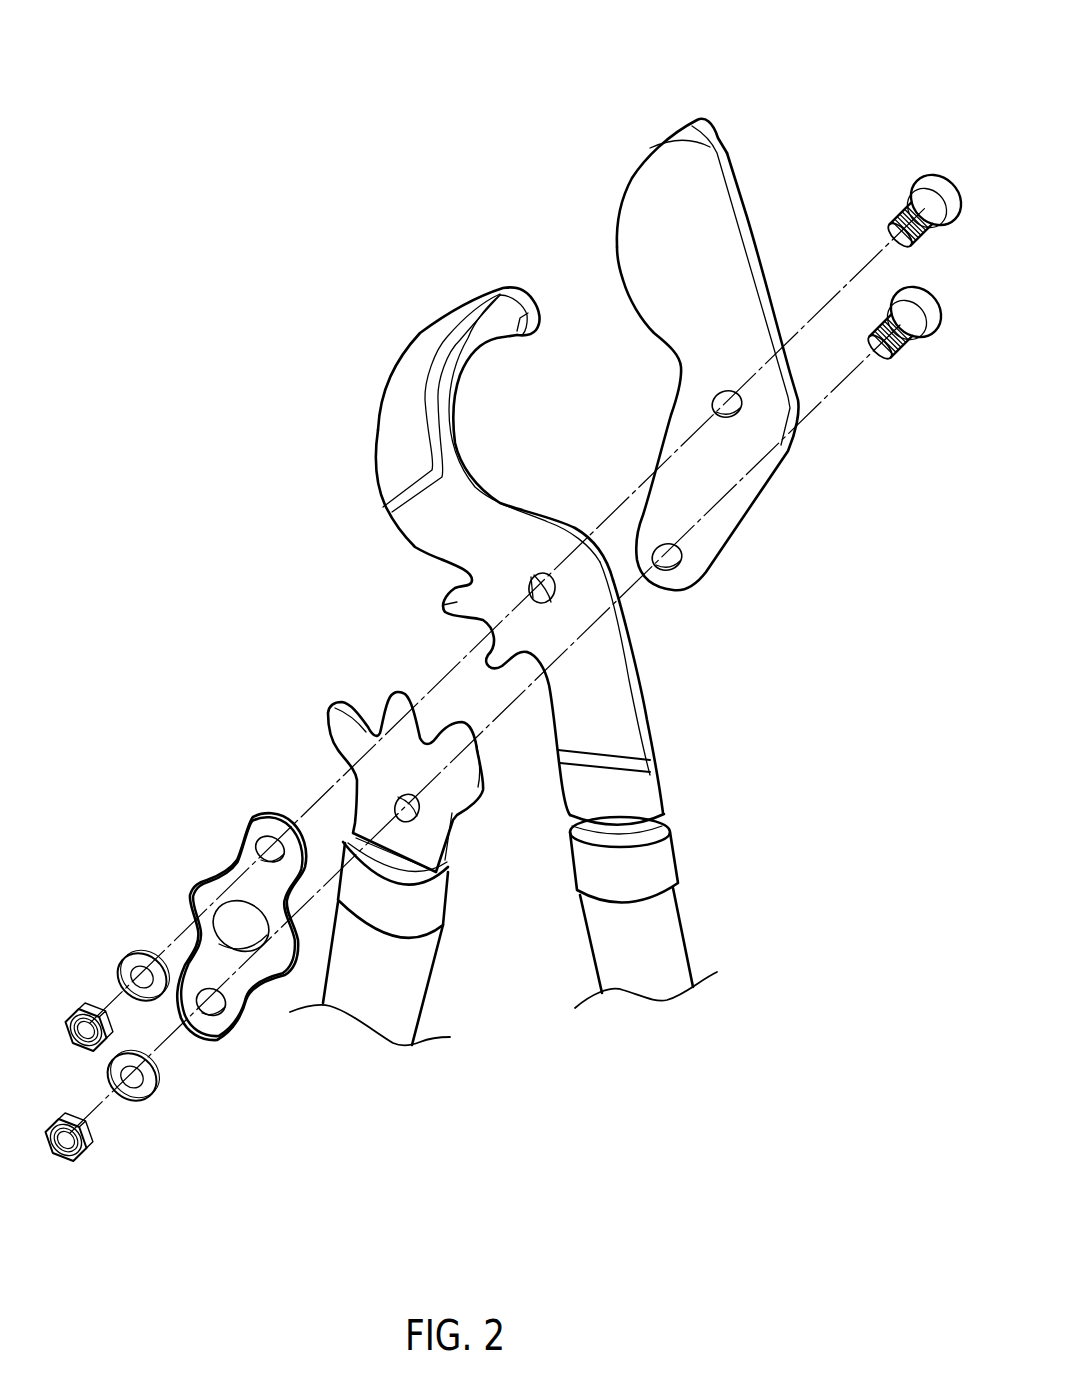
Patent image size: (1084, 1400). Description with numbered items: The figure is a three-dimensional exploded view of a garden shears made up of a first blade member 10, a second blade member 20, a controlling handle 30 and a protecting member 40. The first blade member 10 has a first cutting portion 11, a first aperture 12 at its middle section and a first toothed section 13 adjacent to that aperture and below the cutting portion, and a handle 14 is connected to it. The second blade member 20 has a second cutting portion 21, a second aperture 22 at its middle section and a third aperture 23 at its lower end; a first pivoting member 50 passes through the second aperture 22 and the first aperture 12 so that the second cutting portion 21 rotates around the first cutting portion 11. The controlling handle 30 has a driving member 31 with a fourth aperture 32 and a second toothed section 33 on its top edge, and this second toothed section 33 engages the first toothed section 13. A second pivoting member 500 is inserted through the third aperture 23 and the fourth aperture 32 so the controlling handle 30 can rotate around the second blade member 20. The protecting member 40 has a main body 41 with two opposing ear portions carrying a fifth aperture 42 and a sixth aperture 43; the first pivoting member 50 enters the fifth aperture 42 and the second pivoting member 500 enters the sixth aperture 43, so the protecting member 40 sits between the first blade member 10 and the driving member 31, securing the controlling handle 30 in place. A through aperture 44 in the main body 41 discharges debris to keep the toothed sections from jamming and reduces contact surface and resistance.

The first blade member 10 is at (482, 536).
The first cutting portion 11 is at (455, 403).
The first aperture 12 is at (544, 573).
The first toothed section 13 is at (485, 653).
The handle 14 is at (668, 940).
The second blade member 20 is at (696, 327).
The second cutting portion 21 is at (618, 248).
The second aperture 22 is at (743, 410).
The third aperture 23 is at (682, 558).
The controlling handle 30 is at (397, 835).
The driving member 31 is at (387, 747).
The fourth aperture 32 is at (420, 810).
The second toothed section 33 is at (333, 716).
The protecting member 40 is at (217, 959).
The main body 41 is at (250, 920).
The fifth aperture 42 is at (263, 847).
The sixth aperture 43 is at (224, 1009).
The through aperture 44 is at (265, 940).
The first pivoting member 50 is at (895, 180).
The second pivoting member 500 is at (905, 362).